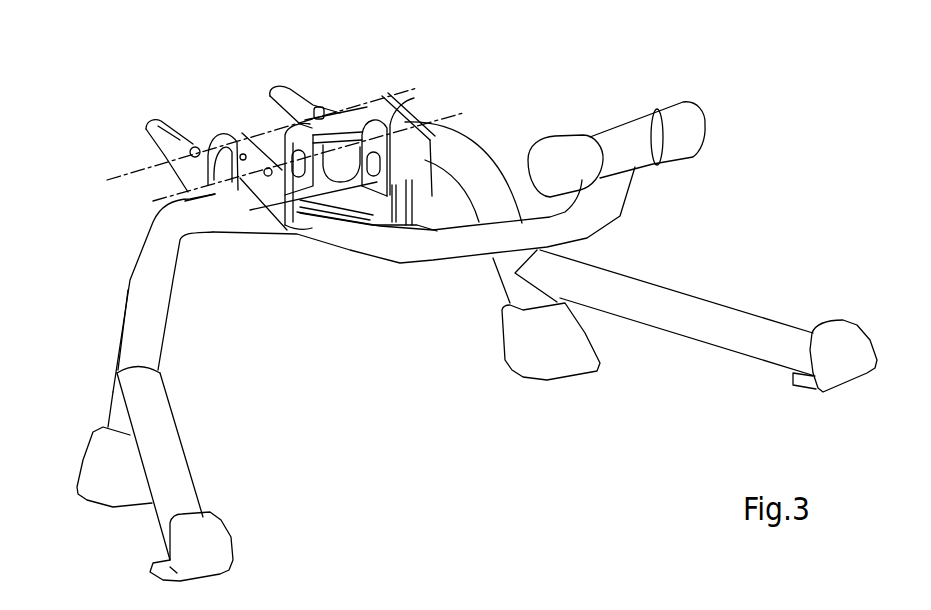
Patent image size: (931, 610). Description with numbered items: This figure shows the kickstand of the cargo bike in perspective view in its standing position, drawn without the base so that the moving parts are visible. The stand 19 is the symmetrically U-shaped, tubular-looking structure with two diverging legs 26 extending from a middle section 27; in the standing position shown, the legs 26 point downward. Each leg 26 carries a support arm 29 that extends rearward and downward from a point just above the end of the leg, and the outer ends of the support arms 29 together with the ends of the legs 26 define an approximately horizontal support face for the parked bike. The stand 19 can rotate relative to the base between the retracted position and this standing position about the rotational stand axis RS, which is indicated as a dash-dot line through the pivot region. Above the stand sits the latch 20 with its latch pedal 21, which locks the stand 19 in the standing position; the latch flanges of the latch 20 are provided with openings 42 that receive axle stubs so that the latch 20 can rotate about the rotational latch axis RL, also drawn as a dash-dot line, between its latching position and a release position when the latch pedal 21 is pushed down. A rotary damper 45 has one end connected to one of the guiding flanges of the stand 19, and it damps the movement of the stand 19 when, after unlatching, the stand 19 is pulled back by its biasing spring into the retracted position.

The stand 19 is at (145, 342).
The latch 20 is at (447, 245).
The latch pedal 21 is at (608, 190).
The legs 26 is at (135, 325).
The middle section 27 is at (213, 216).
The support arm 29 is at (173, 480).
The openings 42 is at (320, 112).
The rotary damper 45 is at (338, 160).
The rotational latch axis RL is at (383, 97).
The rotational stand axis RS is at (438, 118).